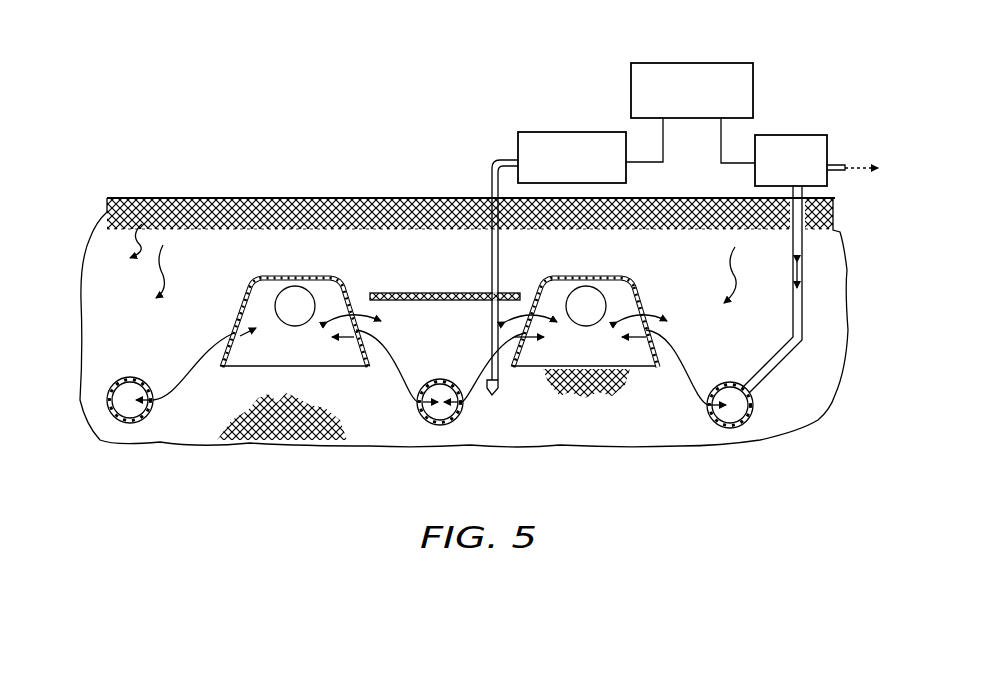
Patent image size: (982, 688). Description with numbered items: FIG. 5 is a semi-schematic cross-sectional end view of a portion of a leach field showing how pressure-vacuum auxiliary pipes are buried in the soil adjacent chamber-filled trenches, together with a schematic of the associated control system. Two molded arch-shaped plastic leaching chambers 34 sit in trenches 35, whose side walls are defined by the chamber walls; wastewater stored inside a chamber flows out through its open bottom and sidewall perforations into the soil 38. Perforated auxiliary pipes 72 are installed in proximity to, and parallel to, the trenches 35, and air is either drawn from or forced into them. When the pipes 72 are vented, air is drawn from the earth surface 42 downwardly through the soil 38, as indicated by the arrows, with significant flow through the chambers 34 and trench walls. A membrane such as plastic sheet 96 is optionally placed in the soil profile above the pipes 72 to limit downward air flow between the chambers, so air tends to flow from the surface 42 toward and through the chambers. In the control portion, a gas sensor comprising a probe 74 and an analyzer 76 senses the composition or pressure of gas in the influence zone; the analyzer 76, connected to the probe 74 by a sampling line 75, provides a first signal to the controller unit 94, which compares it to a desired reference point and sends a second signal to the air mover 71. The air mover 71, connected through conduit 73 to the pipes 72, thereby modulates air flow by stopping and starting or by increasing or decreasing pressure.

The leaching chamber 34 is at (277, 277).
The trench 35 is at (650, 312).
The soil 38 is at (348, 275).
The earth surface 42 is at (190, 198).
The air mover 71 is at (783, 134).
The pressure-vacuum perforated pipe 72 is at (132, 378).
The air conduit 73 is at (793, 298).
The probe 74 is at (498, 394).
The sampling tube 75 is at (499, 246).
The analyzer 76 is at (575, 131).
The controller unit 94 is at (692, 63).
The plastic sheet 96 is at (407, 293).